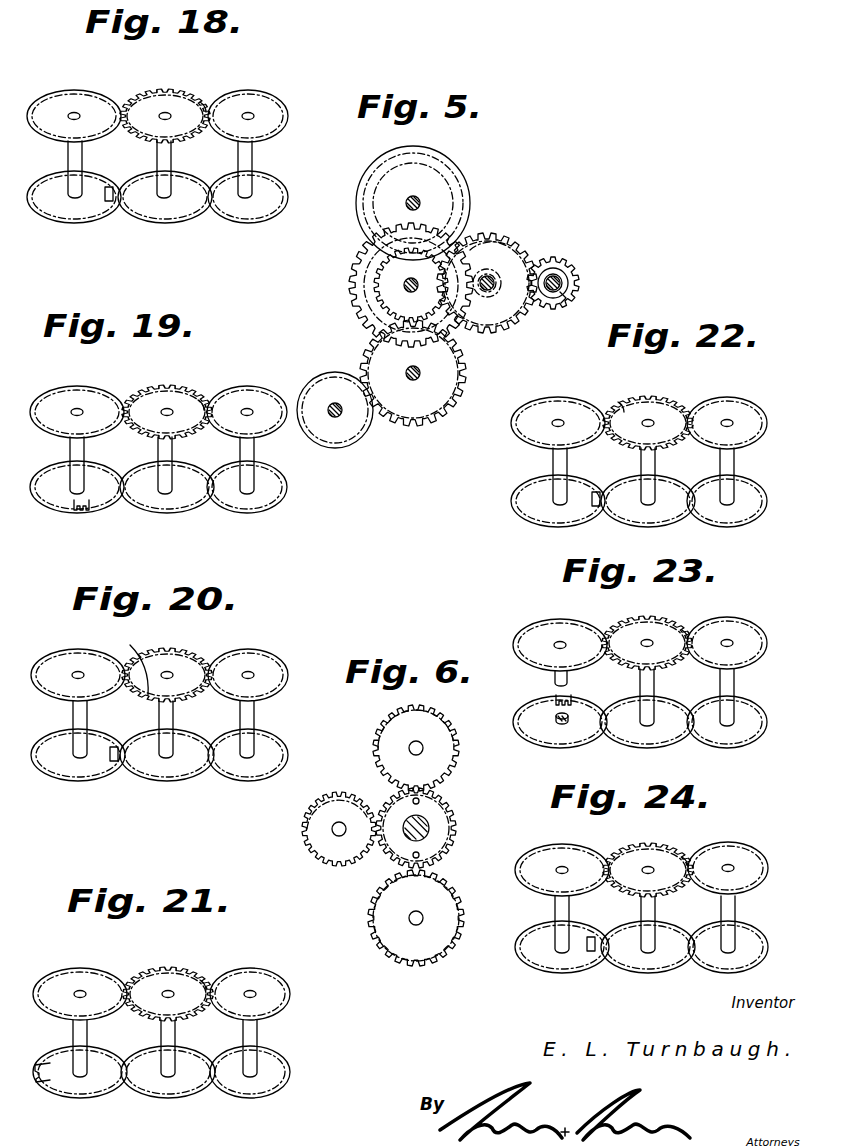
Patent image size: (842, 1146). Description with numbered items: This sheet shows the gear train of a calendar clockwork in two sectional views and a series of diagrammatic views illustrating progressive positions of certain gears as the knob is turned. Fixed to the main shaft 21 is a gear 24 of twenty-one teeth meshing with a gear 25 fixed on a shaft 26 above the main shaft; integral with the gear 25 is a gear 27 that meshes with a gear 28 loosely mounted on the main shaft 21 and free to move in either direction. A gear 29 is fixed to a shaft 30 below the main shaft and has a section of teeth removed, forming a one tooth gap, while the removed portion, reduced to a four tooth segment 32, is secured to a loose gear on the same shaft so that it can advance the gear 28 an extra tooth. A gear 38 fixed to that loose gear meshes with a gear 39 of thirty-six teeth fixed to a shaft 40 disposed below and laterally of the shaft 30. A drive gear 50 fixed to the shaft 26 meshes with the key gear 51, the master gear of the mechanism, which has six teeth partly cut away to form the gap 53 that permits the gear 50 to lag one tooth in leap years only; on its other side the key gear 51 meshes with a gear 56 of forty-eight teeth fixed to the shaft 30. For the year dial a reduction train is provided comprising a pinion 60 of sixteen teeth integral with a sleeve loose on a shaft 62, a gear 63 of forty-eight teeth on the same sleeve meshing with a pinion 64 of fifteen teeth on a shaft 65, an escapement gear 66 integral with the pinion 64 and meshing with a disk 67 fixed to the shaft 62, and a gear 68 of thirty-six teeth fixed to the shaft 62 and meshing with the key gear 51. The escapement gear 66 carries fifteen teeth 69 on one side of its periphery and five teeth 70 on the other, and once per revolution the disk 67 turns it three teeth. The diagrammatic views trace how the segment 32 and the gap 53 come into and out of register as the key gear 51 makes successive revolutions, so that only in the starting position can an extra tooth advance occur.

In FIG. 18, the main shaft 21 is at (157, 155).
In FIG. 5, the main shaft 21 is at (390, 318).
In FIG. 19, the main shaft 21 is at (157, 448).
In FIG. 22, the main shaft 21 is at (640, 460).
In FIG. 20, the main shaft 21 is at (158, 715).
In FIG. 6, the main shaft 21 is at (425, 820).
In FIG. 23, the main shaft 21 is at (647, 697).
In FIG. 24, the main shaft 21 is at (641, 912).
In FIG. 21, the main shaft 21 is at (160, 1030).
In FIG. 5, the gear 24 is at (400, 290).
In FIG. 5, the gear 25 is at (458, 206).
In FIG. 23, the gear 25 is at (740, 735).
In FIG. 18, the shaft 26 is at (238, 155).
In FIG. 5, the shaft 26 is at (420, 200).
In FIG. 19, the shaft 26 is at (240, 450).
In FIG. 22, the shaft 26 is at (720, 462).
In FIG. 20, the shaft 26 is at (240, 715).
In FIG. 6, the shaft 26 is at (410, 742).
In FIG. 23, the shaft 26 is at (727, 697).
In FIG. 24, the shaft 26 is at (721, 908).
In FIG. 21, the shaft 26 is at (242, 1030).
In FIG. 18, the gear 27 is at (258, 205).
In FIG. 5, the gear 27 is at (450, 165).
In FIG. 19, the gear 27 is at (248, 502).
In FIG. 22, the gear 27 is at (742, 508).
In FIG. 20, the gear 27 is at (255, 765).
In FIG. 24, the gear 27 is at (718, 955).
In FIG. 21, the gear 27 is at (268, 1080).
In FIG. 18, the gear 28 is at (178, 210).
In FIG. 5, the gear 28 is at (375, 280).
In FIG. 19, the gear 28 is at (175, 502).
In FIG. 22, the gear 28 is at (655, 510).
In FIG. 20, the gear 28 is at (175, 768).
In FIG. 23, the gear 28 is at (668, 735).
In FIG. 24, the gear 28 is at (655, 960).
In FIG. 21, the gear 28 is at (188, 1080).
In FIG. 18, the gear 29 is at (72, 210).
In FIG. 19, the gear 29 is at (57, 500).
In FIG. 22, the gear 29 is at (538, 508).
In FIG. 20, the gear 29 is at (80, 770).
In FIG. 23, the gear 29 is at (555, 737).
In FIG. 24, the gear 29 is at (552, 960).
In FIG. 21, the gear 29 is at (96, 1085).
In FIG. 18, the shaft 30 is at (68, 155).
In FIG. 5, the shaft 30 is at (416, 381).
In FIG. 19, the shaft 30 is at (70, 448).
In FIG. 22, the shaft 30 is at (552, 460).
In FIG. 20, the shaft 30 is at (72, 715).
In FIG. 23, the shaft 30 is at (561, 678).
In FIG. 24, the shaft 30 is at (554, 908).
In FIG. 21, the shaft 30 is at (73, 1030).
In FIG. 18, the four tooth segment 32 is at (110, 201).
In FIG. 19, the four tooth segment 32 is at (85, 512).
In FIG. 22, the four tooth segment 32 is at (596, 507).
In FIG. 20, the four tooth segment 32 is at (116, 763).
In FIG. 23, the four tooth segment 32 is at (572, 698).
In FIG. 24, the four tooth segment 32 is at (592, 937).
In FIG. 21, the four tooth segment 32 is at (43, 1082).
In FIG. 5, the gear 38 is at (455, 388).
In FIG. 5, the gear 39 is at (352, 425).
In FIG. 5, the shaft 40 is at (337, 418).
In FIG. 18, the drive gear 50 is at (272, 110).
In FIG. 19, the drive gear 50 is at (258, 400).
In FIG. 22, the drive gear 50 is at (745, 412).
In FIG. 20, the drive gear 50 is at (265, 665).
In FIG. 6, the drive gear 50 is at (430, 725).
In FIG. 24, the drive gear 50 is at (745, 858).
In FIG. 21, the drive gear 50 is at (270, 980).
In FIG. 18, the key gear 51 is at (166, 98).
In FIG. 19, the key gear 51 is at (160, 397).
In FIG. 22, the key gear 51 is at (660, 410).
In FIG. 20, the key gear 51 is at (175, 660).
In FIG. 6, the key gear 51 is at (440, 825).
In FIG. 23, the key gear 51 is at (638, 628).
In FIG. 24, the key gear 51 is at (637, 852).
In FIG. 21, the key gear 51 is at (165, 975).
In FIG. 18, the gap of partly removed teeth 53 is at (204, 106).
In FIG. 19, the gap of partly removed teeth 53 is at (200, 405).
In FIG. 22, the gap of partly removed teeth 53 is at (622, 408).
In FIG. 20, the gap of partly removed teeth 53 is at (132, 659).
In FIG. 23, the gap of partly removed teeth 53 is at (685, 632).
In FIG. 24, the gap of partly removed teeth 53 is at (683, 858).
In FIG. 21, the gap of partly removed teeth 53 is at (203, 982).
In FIG. 18, the gear 56 is at (78, 96).
In FIG. 19, the gear 56 is at (85, 397).
In FIG. 22, the gear 56 is at (553, 405).
In FIG. 20, the gear 56 is at (70, 658).
In FIG. 6, the gear 56 is at (445, 905).
In FIG. 23, the gear 56 is at (543, 630).
In FIG. 24, the gear 56 is at (548, 852).
In FIG. 21, the gear 56 is at (70, 975).
In FIG. 5, the pinion 60 is at (508, 332).
In FIG. 5, the shaft 62 is at (493, 283).
In FIG. 6, the shaft 62 is at (339, 836).
In FIG. 5, the gear 63 is at (507, 253).
In FIG. 5, the pinion 64 is at (578, 283).
In FIG. 5, the shaft 65 is at (565, 299).
In FIG. 5, the escapement gear 66 is at (562, 278).
In FIG. 5, the disk 67 is at (503, 238).
In FIG. 6, the gear 68 is at (335, 800).
In FIG. 5, the teeth 69 is at (575, 275).
In FIG. 5, the teeth 70 is at (563, 266).